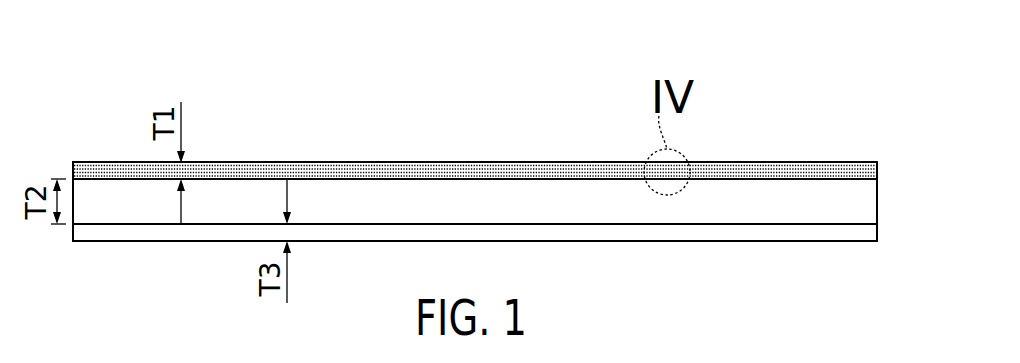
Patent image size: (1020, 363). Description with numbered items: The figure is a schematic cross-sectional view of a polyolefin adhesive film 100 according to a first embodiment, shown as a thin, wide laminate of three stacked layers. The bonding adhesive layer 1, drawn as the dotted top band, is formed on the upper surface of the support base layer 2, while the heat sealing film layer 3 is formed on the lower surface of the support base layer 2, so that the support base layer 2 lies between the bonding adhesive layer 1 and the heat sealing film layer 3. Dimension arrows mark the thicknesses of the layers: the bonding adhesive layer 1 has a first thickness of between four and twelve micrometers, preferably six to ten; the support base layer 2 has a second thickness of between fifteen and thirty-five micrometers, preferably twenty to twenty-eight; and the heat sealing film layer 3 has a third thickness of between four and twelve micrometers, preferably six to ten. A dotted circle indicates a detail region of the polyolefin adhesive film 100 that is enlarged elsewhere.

The polyolefin adhesive film 100 is at (64, 86).
The bonding adhesive layer 1 is at (877, 172).
The support base layer 2 is at (867, 205).
The heat sealing film layer 3 is at (866, 233).